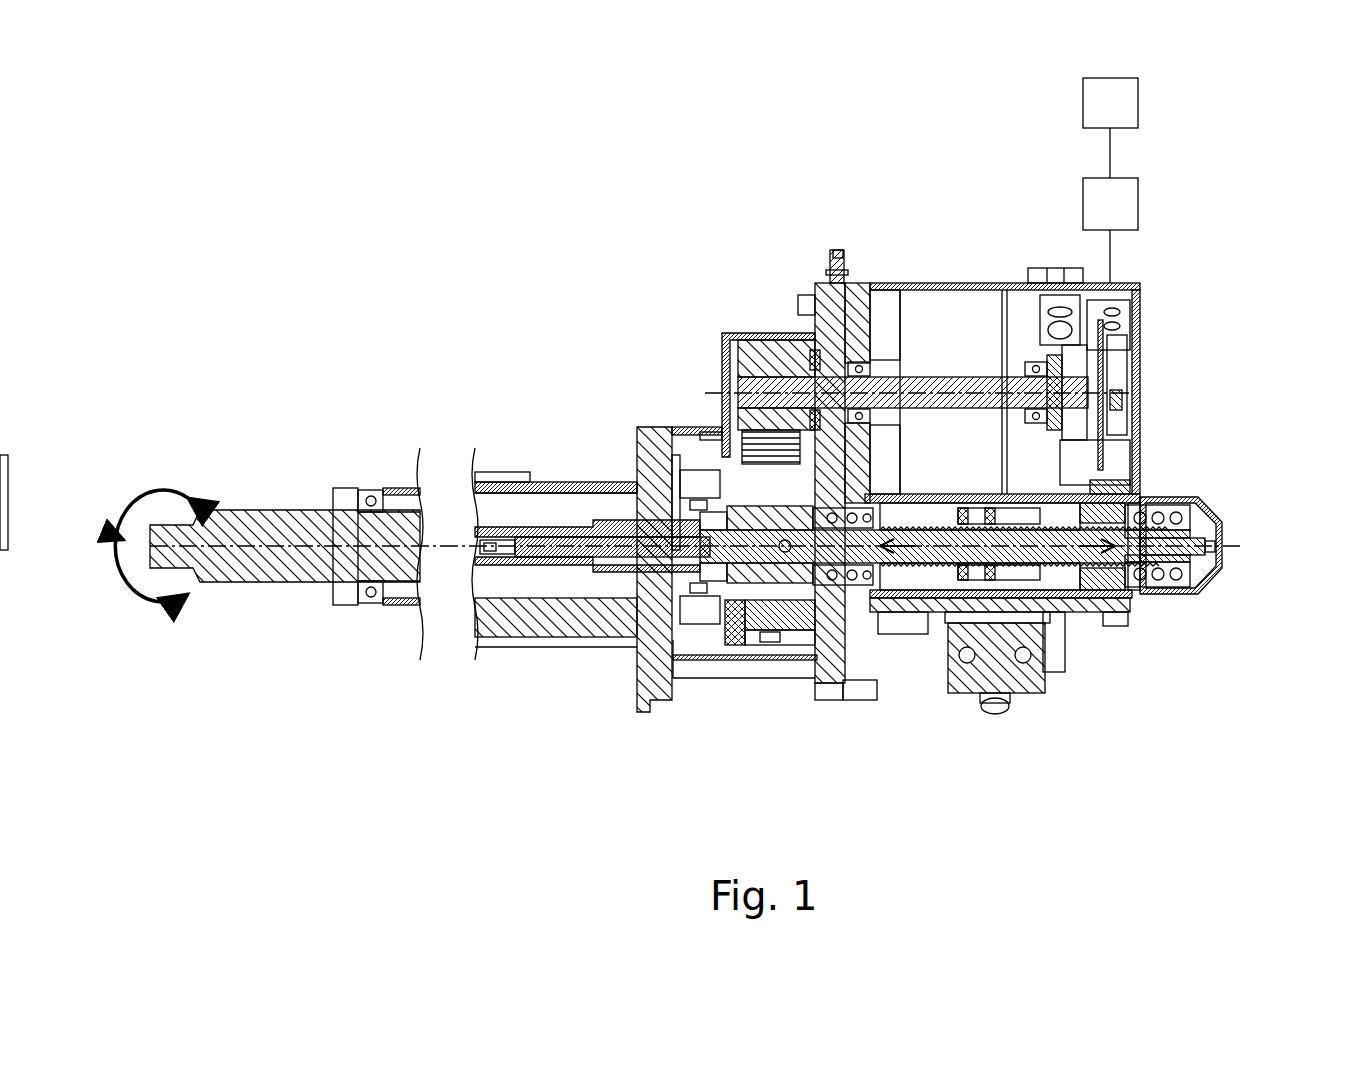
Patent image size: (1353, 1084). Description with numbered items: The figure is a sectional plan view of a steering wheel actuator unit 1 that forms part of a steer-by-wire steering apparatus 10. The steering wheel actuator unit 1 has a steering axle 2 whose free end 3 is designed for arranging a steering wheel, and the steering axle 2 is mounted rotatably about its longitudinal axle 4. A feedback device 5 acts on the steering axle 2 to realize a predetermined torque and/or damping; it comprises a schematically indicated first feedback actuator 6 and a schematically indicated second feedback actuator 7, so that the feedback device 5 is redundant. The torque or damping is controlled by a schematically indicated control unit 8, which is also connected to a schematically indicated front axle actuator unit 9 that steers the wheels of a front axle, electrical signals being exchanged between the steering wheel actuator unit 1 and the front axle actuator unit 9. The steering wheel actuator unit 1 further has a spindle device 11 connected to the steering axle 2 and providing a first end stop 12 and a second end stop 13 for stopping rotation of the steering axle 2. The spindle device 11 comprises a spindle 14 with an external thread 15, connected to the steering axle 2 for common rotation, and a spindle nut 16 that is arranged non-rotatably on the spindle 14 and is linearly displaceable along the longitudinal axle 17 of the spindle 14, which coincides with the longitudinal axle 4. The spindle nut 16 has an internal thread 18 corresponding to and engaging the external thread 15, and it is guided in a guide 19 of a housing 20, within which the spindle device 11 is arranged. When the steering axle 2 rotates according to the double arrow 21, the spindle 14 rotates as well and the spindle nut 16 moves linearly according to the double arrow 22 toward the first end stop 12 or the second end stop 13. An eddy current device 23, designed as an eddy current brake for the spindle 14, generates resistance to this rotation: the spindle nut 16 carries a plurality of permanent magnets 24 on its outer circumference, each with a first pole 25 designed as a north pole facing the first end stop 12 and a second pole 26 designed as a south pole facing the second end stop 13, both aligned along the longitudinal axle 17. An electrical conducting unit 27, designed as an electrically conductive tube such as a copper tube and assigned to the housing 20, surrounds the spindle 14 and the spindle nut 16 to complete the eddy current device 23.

The steering wheel actuator unit 1 is at (575, 205).
The steering axle 2 is at (287, 584).
The free end 3 is at (132, 520).
The longitudinal axle 4 is at (263, 548).
The feedback device 5 is at (896, 280).
The first feedback actuator 6 is at (932, 298).
The second feedback actuator 7 is at (963, 440).
The control unit 8 is at (1110, 230).
The front axle actuator unit 9 is at (1110, 128).
The steer-by-wire steering apparatus 10 is at (1200, 228).
The spindle device 11 is at (933, 600).
The first end stop 12 is at (893, 605).
The second end stop 13 is at (1135, 490).
The spindle 14 is at (857, 585).
The external thread 15 is at (1095, 500).
The spindle nut 16 is at (1082, 640).
The longitudinal axle 17 is at (797, 598).
The internal thread 18 is at (1105, 590).
The guide 19 is at (1195, 592).
The housing 20 is at (1137, 618).
The double arrow 21 is at (152, 610).
The double arrow 22 is at (1085, 522).
The eddy current device 23 is at (1007, 625).
The magnets 24 is at (1045, 522).
The first pole 25 is at (983, 605).
The second pole 26 is at (1058, 590).
The electrical conducting unit 27 is at (1085, 480).